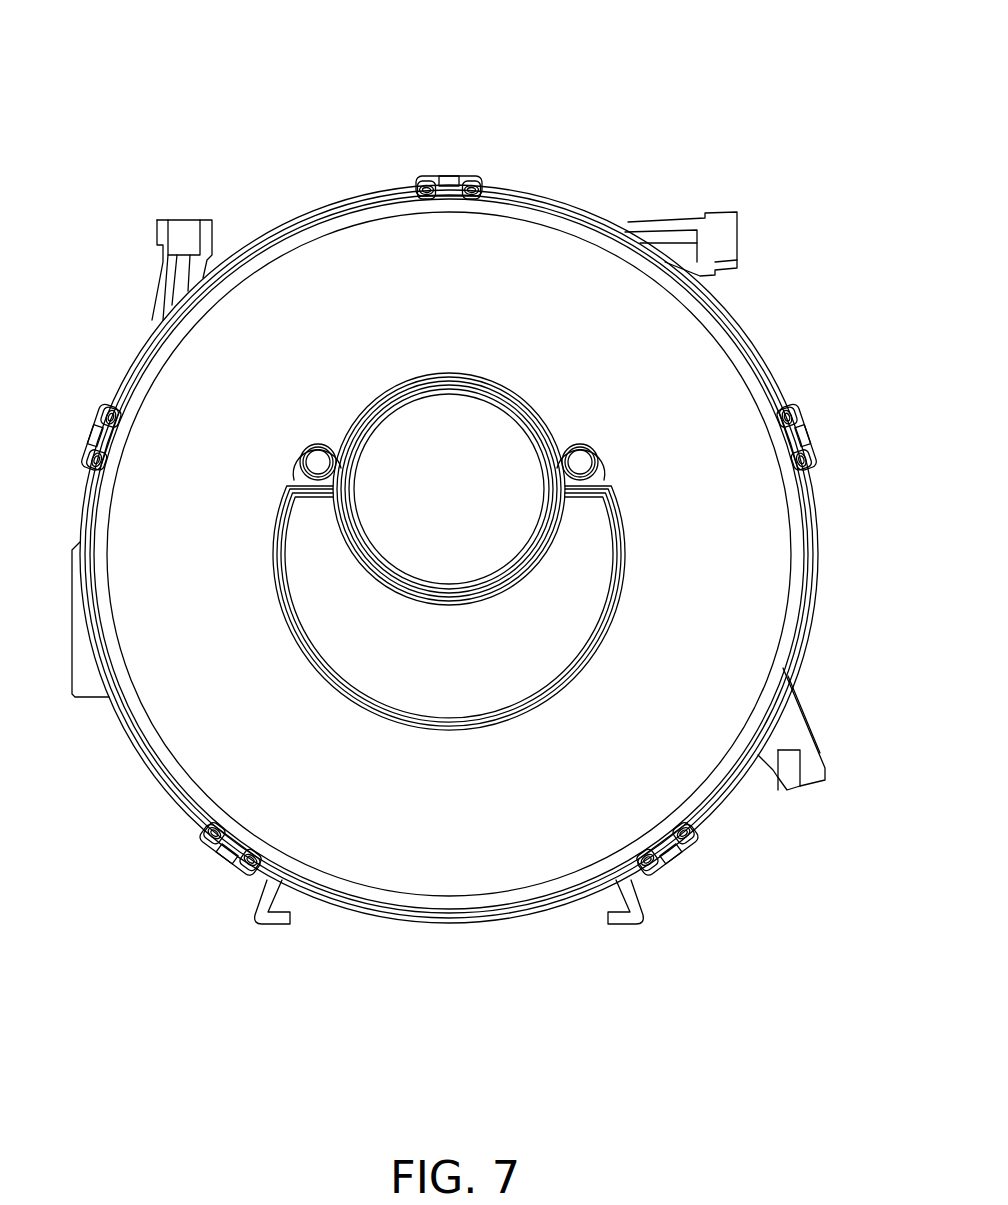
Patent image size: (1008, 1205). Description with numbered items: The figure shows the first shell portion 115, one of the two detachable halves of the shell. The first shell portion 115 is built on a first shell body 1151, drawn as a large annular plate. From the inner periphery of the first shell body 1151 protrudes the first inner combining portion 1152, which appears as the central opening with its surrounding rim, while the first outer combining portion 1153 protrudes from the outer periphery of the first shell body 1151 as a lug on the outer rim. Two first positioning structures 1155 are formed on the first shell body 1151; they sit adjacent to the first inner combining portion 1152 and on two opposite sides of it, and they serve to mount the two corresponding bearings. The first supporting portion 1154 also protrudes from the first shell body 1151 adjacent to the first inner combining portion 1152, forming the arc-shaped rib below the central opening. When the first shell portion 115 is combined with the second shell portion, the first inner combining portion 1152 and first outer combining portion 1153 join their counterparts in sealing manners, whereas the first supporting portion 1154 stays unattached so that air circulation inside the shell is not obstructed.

The first shell portion 115 is at (715, 106).
The first shell body 1151 is at (207, 383).
The first inner combining portion 1152 is at (404, 385).
The first outer combining portion 1153 is at (535, 197).
The first supporting portion 1154 is at (505, 722).
The first positioning structure 1155 is at (317, 462).